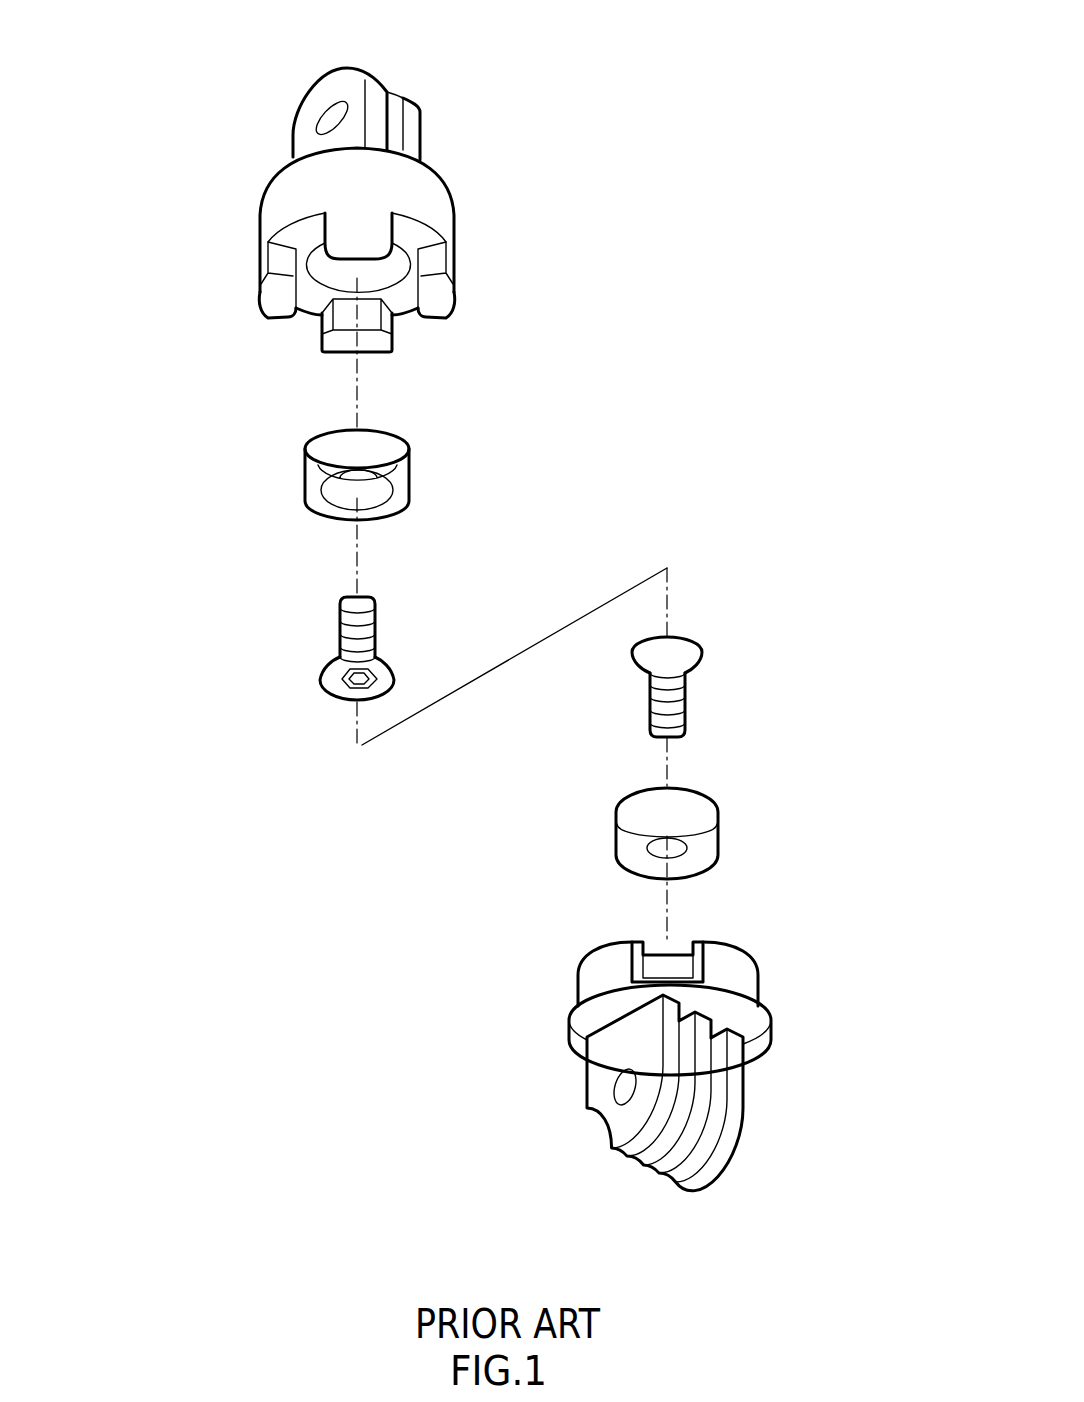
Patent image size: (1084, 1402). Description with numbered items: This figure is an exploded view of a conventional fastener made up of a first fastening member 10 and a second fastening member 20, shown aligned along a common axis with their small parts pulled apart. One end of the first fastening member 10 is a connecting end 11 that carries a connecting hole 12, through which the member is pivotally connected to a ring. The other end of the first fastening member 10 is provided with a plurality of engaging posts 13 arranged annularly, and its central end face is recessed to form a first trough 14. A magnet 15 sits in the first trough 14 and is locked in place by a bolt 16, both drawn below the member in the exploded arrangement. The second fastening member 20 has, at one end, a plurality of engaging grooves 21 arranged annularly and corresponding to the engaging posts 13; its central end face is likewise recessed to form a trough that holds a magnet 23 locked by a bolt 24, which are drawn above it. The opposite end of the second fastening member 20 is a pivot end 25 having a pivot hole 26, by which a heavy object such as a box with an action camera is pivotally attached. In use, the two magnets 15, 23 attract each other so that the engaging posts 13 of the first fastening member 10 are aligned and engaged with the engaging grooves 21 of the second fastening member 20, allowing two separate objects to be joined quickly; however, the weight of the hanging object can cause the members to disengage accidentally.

The first fastening member 10 is at (258, 206).
The connecting end 11 is at (418, 109).
The connecting hole 12 is at (335, 118).
The engaging posts 13 is at (440, 289).
The first trough 14 is at (383, 272).
The magnet 15 is at (310, 457).
The bolt 16 is at (340, 632).
The second fastening member 20 is at (572, 1030).
The engaging grooves 21 is at (660, 968).
The magnet 23 is at (710, 822).
The bolt 24 is at (680, 697).
The pivot end 25 is at (748, 1137).
The pivot hole 26 is at (623, 1087).